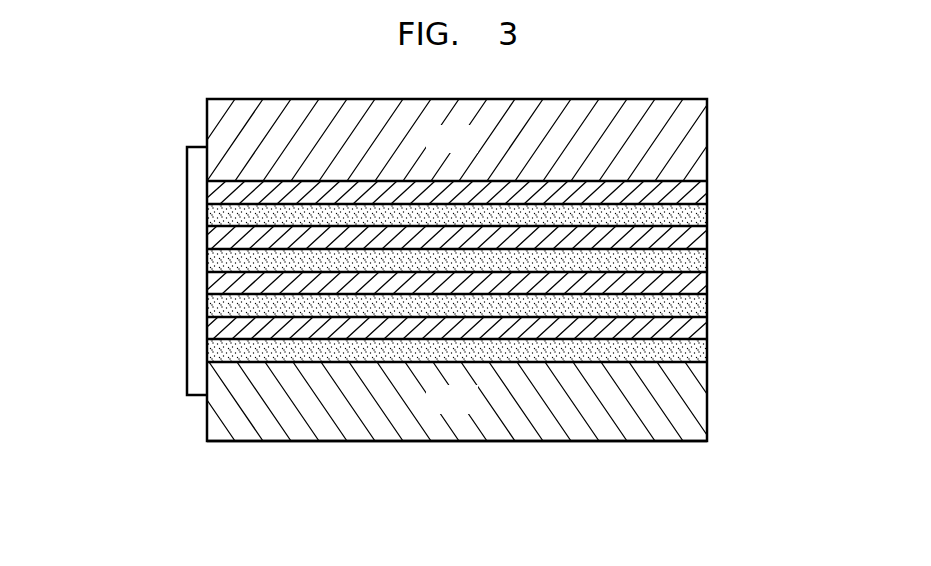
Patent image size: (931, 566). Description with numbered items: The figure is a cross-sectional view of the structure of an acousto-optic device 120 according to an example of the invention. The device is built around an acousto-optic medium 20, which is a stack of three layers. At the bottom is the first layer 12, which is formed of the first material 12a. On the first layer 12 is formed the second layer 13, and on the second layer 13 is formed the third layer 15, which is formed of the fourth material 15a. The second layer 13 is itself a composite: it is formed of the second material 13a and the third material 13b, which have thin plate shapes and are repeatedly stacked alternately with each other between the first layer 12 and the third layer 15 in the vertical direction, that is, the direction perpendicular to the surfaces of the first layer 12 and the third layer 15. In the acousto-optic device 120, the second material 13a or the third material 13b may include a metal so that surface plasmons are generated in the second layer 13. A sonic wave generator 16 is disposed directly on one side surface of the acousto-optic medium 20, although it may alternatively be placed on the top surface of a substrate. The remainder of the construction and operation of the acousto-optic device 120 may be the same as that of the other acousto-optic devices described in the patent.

The acousto-optic device 120 is at (92, 258).
The first layer 12 is at (707, 401).
The first material 12a is at (474, 411).
The second layer 13 is at (531, 273).
The second material 13a is at (506, 352).
The third material 13b is at (707, 327).
The third layer 15 is at (702, 141).
The fourth material 15a is at (474, 150).
The sonic wave generator 16 is at (190, 272).
The acousto-optic medium 20 is at (460, 463).